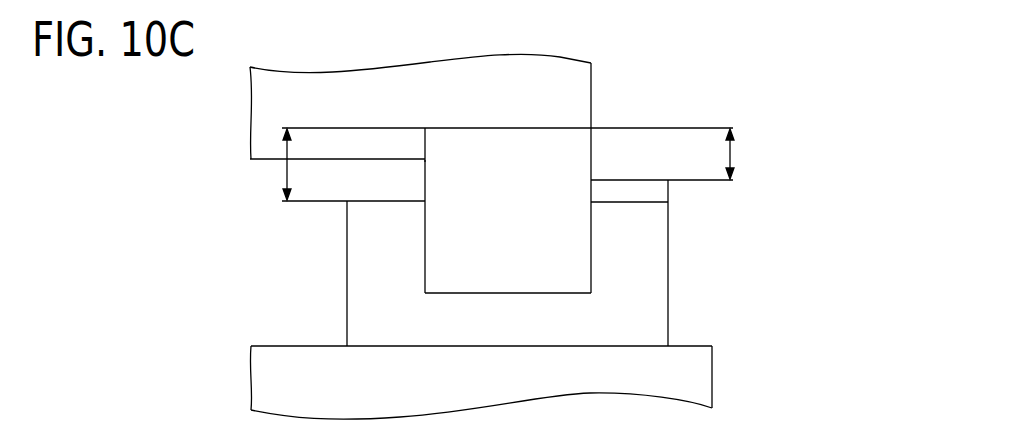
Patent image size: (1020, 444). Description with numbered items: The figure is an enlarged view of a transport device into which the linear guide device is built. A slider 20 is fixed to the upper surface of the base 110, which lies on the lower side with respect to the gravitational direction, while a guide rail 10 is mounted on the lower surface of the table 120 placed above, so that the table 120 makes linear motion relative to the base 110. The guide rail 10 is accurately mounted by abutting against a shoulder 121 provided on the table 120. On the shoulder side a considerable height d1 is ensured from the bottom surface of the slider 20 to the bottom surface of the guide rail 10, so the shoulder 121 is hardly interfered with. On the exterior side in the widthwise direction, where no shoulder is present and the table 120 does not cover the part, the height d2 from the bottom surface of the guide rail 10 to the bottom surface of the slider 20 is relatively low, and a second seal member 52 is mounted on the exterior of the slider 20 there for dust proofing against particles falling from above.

The guide rail 10 is at (580, 247).
The slider 20 is at (660, 304).
The second seal member 52 is at (663, 190).
The base 110 is at (705, 375).
The table 120 is at (585, 97).
The shoulder 121 is at (426, 146).
The height d1 is at (273, 164).
The height d2 is at (743, 154).